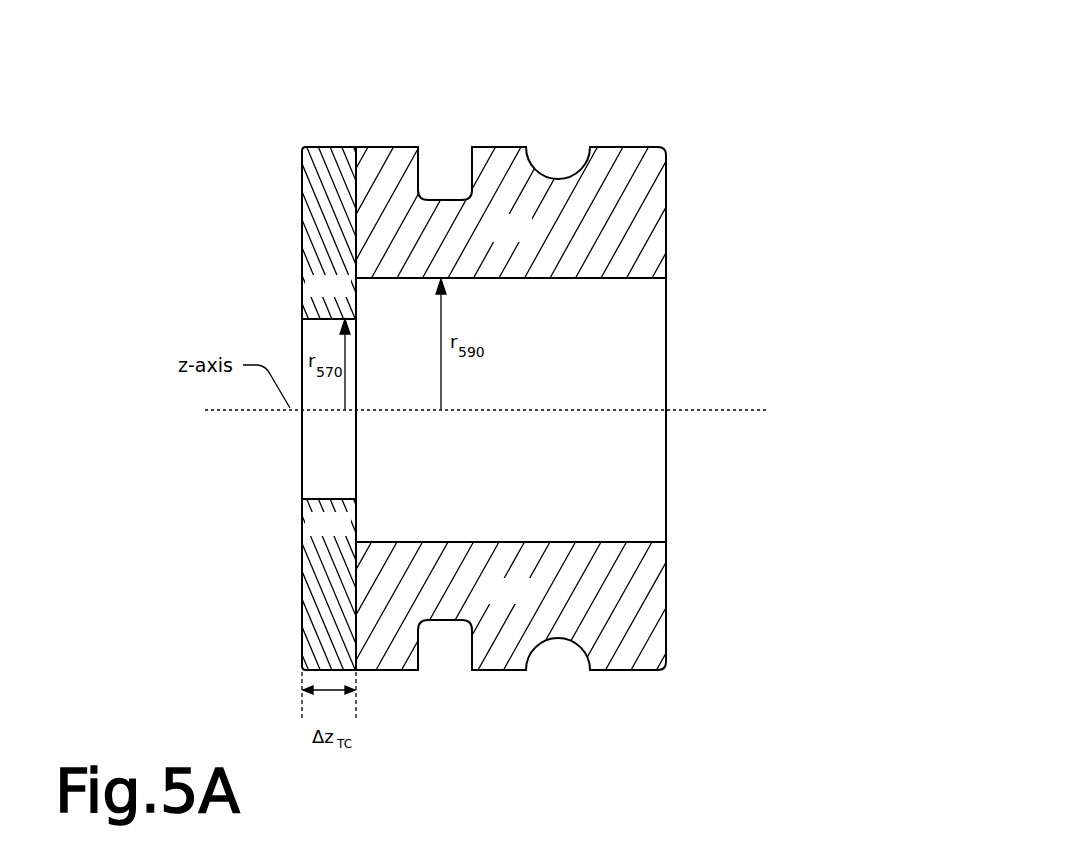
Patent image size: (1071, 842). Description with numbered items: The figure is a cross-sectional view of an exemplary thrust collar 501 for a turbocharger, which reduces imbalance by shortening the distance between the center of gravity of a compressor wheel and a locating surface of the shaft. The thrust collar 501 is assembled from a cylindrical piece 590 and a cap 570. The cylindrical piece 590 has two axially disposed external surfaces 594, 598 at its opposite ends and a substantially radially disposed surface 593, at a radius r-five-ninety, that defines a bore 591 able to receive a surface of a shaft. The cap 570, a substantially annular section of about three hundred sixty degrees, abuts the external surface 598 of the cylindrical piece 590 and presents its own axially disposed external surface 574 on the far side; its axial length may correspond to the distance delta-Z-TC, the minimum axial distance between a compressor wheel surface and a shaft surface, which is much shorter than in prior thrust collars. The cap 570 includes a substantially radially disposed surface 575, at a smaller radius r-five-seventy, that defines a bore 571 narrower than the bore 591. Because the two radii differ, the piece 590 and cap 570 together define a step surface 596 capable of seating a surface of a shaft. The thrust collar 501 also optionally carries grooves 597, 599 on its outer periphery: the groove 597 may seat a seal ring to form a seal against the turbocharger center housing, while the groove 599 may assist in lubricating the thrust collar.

The thrust collar 501 is at (646, 62).
The axially disposed external surface 574 is at (302, 247).
The cap 570 is at (346, 296).
The bore 571 is at (345, 448).
The substantially radially disposed surface 575 is at (325, 499).
The step surface 596 is at (357, 525).
The cylindrical piece 590 is at (528, 239).
The bore 591 is at (553, 382).
The substantially radially disposed surface 593 is at (491, 280).
The axially disposed external surface 594 is at (667, 190).
The groove 597 is at (421, 147).
The axially disposed external surface 598 is at (355, 147).
The groove 599 is at (527, 147).